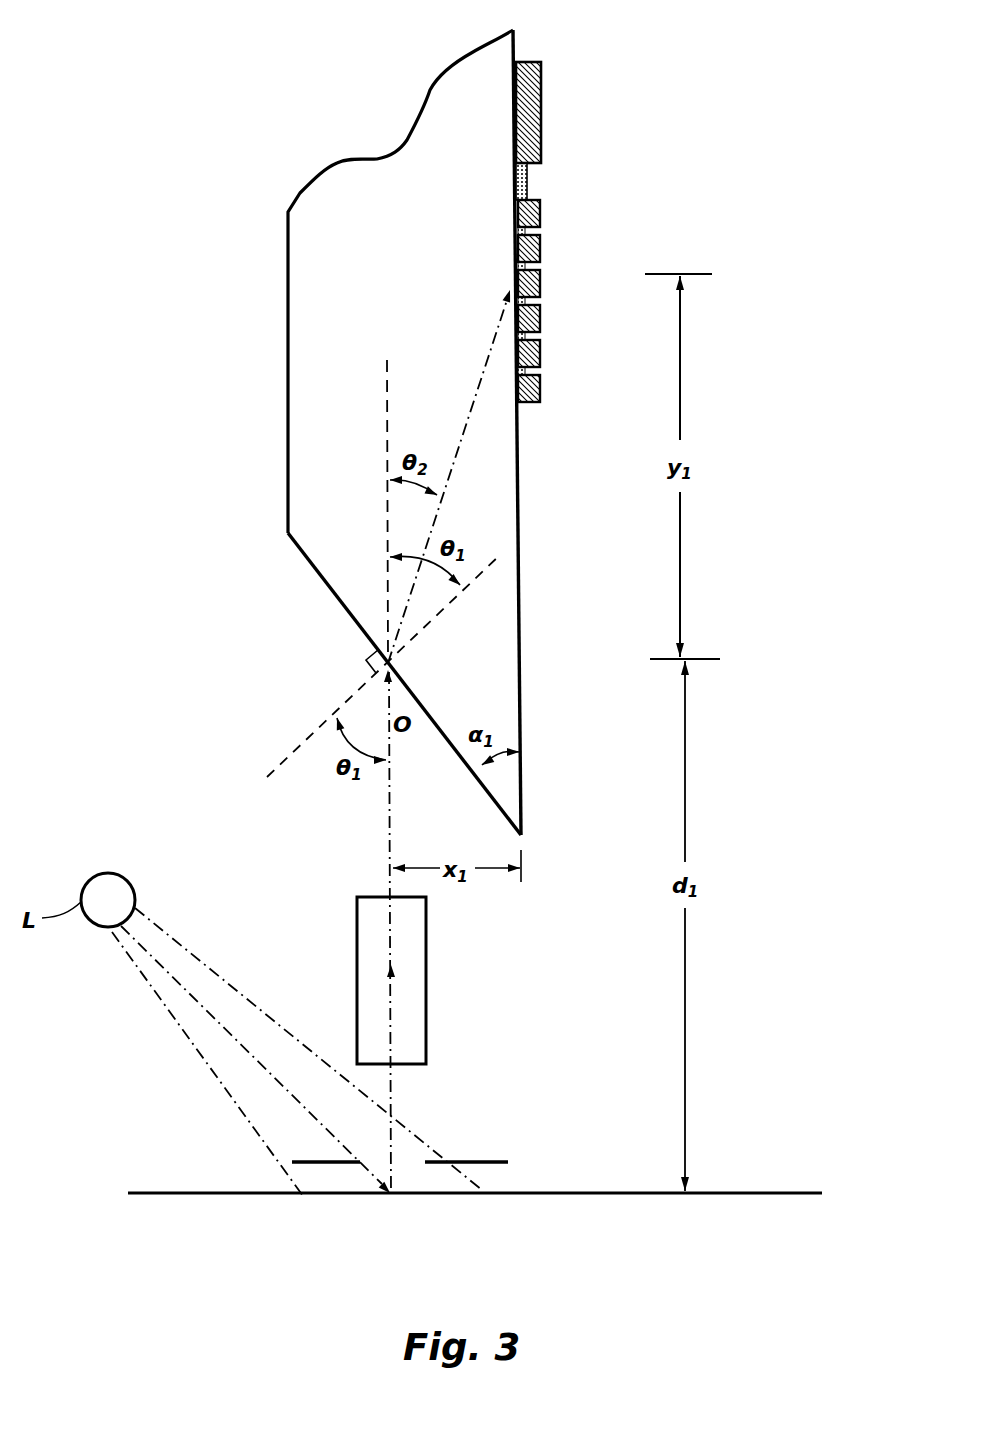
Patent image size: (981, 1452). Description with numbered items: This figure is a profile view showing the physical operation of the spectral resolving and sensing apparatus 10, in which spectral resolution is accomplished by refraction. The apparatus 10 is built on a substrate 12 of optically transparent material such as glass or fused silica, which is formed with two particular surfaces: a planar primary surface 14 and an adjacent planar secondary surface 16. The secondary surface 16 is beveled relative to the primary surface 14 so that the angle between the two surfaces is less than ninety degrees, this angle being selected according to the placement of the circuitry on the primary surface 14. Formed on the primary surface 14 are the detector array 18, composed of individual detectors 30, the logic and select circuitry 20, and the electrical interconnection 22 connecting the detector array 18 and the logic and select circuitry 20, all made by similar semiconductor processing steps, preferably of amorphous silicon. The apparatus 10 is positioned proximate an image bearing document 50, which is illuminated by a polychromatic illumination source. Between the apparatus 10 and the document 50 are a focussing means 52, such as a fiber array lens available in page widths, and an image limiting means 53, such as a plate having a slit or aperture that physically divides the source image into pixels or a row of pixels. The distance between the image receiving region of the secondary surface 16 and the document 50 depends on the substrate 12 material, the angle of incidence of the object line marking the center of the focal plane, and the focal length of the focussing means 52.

The spectral resolving and sensing apparatus 10 is at (232, 63).
The substrate 12 is at (312, 273).
The planar primary surface 14 is at (530, 654).
The planar secondary surface 16 is at (301, 572).
The detector array 18 is at (563, 210).
The logic and select circuitry 20 is at (543, 92).
The electrical interconnection 22 is at (528, 186).
The individual detector 30 is at (540, 403).
The image bearing document 50 is at (765, 1192).
The focussing means 52 is at (427, 970).
The image limiting means 53 is at (462, 1160).